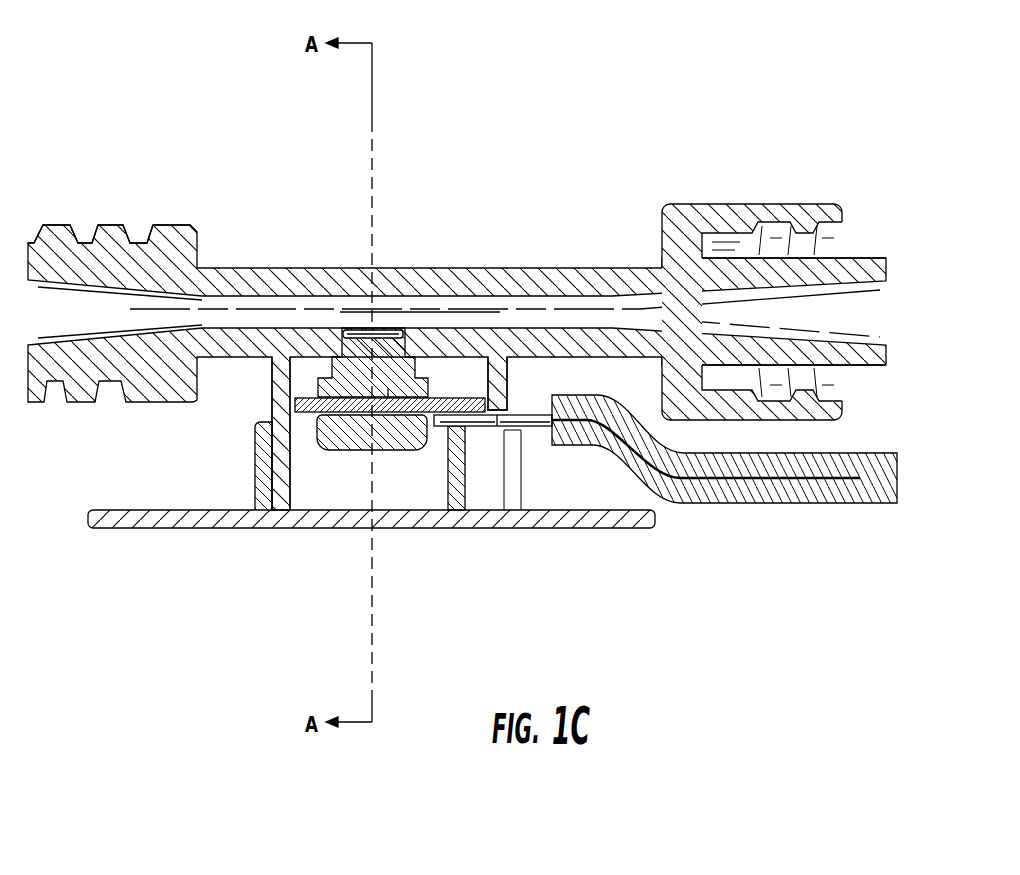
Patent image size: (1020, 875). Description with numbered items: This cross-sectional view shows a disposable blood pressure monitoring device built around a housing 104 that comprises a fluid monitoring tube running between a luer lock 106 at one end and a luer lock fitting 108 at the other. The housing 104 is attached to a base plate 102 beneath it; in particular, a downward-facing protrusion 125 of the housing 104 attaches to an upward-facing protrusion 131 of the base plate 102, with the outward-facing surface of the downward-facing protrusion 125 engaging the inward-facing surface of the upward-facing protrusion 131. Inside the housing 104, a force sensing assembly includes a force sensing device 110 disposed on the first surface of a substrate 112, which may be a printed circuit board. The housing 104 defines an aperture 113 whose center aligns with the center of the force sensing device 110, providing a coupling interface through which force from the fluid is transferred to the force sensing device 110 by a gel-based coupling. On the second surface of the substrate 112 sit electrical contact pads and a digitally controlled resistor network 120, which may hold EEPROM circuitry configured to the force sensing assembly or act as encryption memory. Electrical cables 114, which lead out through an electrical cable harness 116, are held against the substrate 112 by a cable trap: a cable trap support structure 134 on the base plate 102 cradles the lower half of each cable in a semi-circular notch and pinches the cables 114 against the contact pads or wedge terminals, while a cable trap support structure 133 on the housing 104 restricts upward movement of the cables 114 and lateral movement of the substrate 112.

The base plate 102 is at (103, 530).
The housing 104 is at (262, 268).
The luer lock 106 is at (56, 225).
The luer lock fitting 108 is at (763, 204).
The force sensing device 110 is at (385, 347).
The substrate 112 is at (297, 404).
The aperture 113 is at (412, 322).
The electrical cables 114 is at (536, 427).
The electrical cable harness 116 is at (808, 505).
The digitally controlled resistor network 120 is at (390, 440).
The downward-facing protrusion 125 is at (290, 473).
The upward-facing protrusion 131 is at (256, 468).
The cable trap support structure 133 is at (512, 385).
The cable trap support structure 134 is at (465, 467).